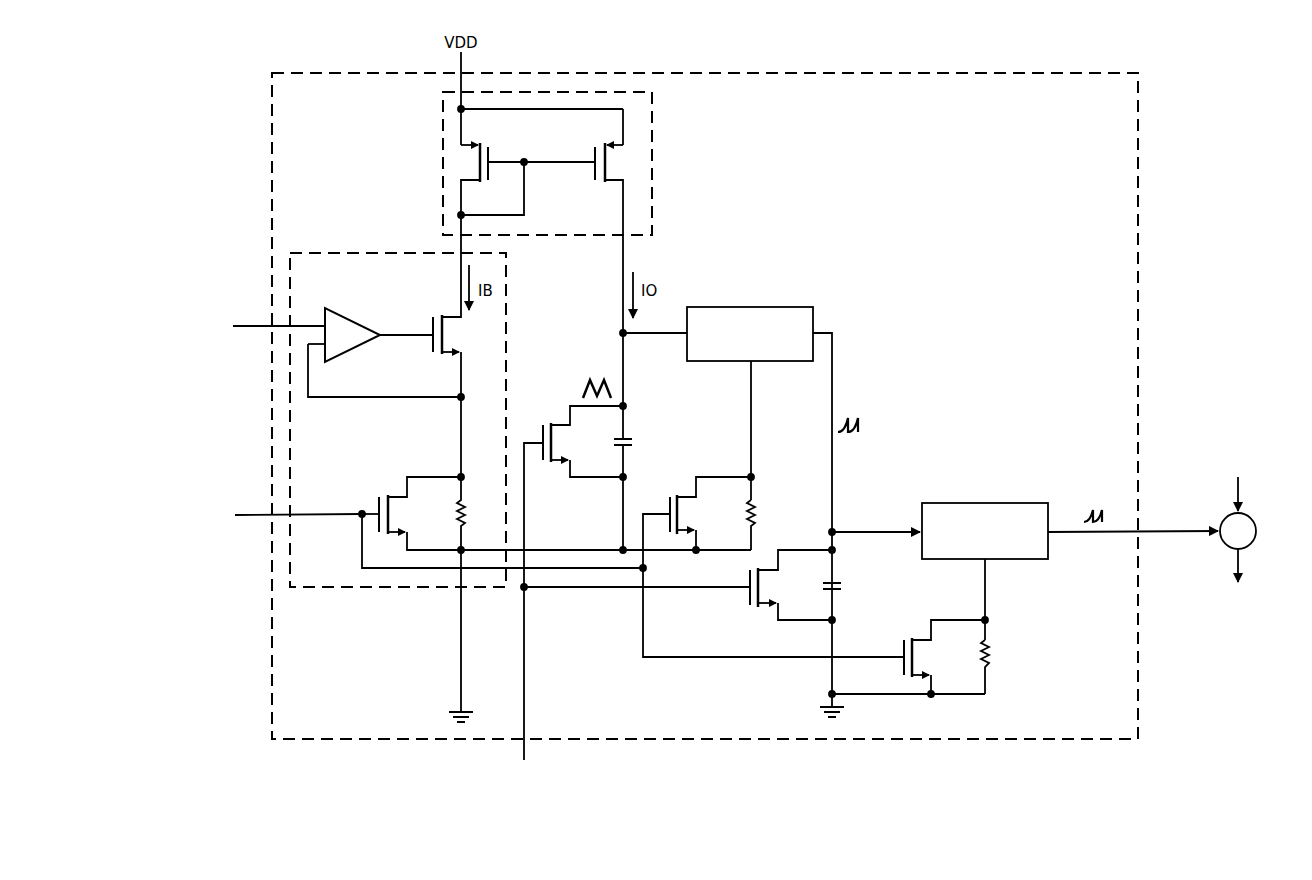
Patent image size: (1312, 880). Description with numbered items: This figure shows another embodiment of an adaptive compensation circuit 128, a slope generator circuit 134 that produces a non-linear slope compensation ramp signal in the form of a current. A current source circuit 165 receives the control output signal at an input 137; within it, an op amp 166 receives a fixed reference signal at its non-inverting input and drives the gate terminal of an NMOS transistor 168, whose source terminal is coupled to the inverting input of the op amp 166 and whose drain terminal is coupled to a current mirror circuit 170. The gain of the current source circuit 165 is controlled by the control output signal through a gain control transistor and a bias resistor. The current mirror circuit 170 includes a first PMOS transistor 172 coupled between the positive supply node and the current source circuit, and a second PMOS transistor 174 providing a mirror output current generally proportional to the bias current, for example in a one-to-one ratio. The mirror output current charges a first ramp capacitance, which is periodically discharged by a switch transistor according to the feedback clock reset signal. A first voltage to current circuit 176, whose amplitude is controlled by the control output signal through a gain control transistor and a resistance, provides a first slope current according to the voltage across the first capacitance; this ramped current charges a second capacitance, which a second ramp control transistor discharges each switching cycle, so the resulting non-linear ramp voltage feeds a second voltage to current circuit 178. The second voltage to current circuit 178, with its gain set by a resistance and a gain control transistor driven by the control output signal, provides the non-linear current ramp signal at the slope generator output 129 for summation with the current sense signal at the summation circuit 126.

The adaptive compensation circuit 128 is at (226, 90).
The slope generator circuit 134 is at (897, 200).
The current source circuit 165 is at (350, 250).
The op amp 166 is at (361, 318).
The NMOS transistor 168 is at (430, 345).
The current mirror circuit 170 is at (655, 161).
The first PMOS transistor 172 is at (490, 157).
The transistor 174 is at (591, 170).
The first voltage to current circuit 176 is at (760, 307).
The second voltage to current circuit 178 is at (995, 503).
The input 137 is at (255, 518).
The slope generator output 129 is at (1185, 533).
The summation circuit 126 is at (1252, 545).